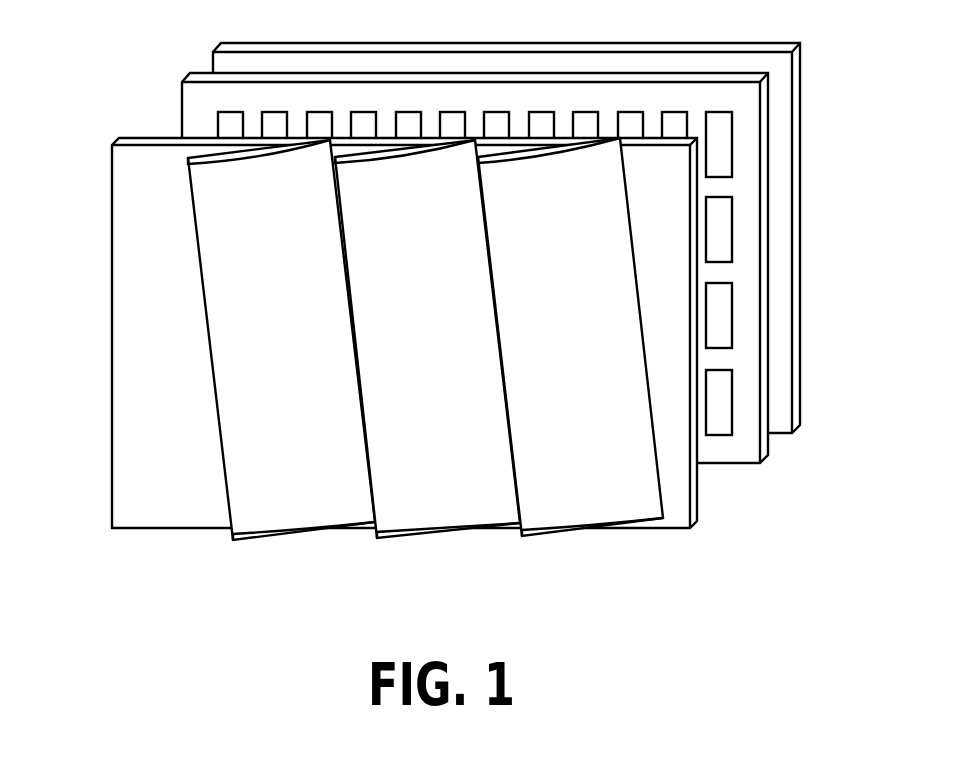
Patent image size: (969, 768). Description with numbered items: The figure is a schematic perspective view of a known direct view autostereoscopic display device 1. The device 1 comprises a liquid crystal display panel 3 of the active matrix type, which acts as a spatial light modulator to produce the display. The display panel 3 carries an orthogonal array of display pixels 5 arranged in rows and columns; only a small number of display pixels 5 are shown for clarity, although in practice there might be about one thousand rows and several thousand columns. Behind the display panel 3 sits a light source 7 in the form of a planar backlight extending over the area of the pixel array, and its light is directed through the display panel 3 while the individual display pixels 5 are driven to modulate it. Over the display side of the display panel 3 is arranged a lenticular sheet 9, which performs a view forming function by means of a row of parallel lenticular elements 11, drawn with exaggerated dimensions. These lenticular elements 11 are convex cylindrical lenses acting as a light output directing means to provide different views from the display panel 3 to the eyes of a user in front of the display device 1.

The autostereoscopic display device 1 is at (88, 51).
The liquid crystal display panel 3 is at (768, 447).
The display pixels 5 is at (732, 225).
The light source 7 is at (800, 362).
The lenticular sheet 9 is at (697, 507).
The lenticular elements 11 is at (308, 508).